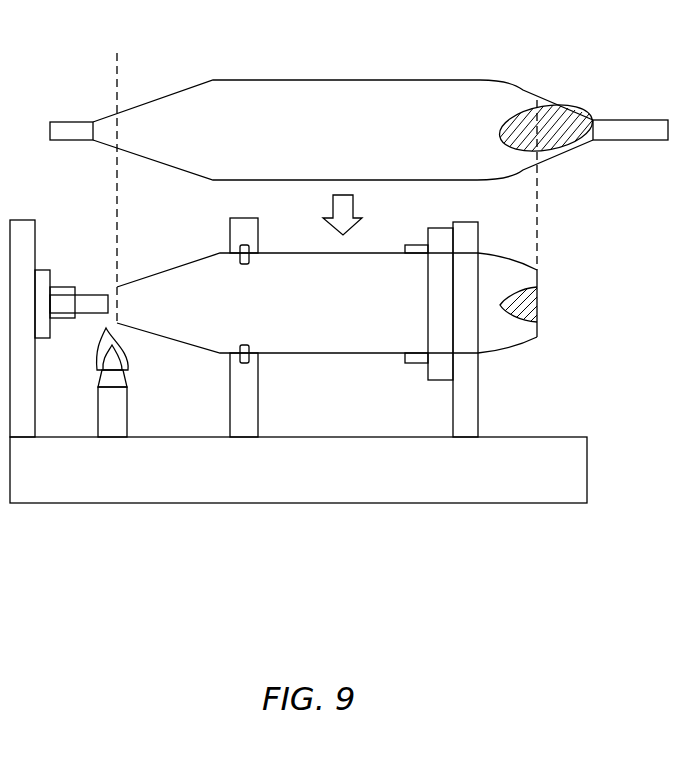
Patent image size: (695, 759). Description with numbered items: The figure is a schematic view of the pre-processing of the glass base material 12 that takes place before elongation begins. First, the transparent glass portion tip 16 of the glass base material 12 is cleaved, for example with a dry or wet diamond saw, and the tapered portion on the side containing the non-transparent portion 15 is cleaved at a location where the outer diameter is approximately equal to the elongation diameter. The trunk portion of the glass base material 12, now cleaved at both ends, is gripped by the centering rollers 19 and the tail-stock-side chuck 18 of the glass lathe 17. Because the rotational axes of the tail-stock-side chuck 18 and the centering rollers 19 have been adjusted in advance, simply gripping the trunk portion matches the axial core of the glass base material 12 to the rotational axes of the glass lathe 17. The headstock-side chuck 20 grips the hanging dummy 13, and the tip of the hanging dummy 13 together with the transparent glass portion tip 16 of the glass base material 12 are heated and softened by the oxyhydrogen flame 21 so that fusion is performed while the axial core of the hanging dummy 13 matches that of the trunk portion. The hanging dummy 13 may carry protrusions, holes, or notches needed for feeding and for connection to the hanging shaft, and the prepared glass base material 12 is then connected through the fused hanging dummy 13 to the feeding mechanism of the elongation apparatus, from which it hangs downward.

The glass base material 12 is at (322, 80).
The hanging dummy 13 is at (89, 303).
The non-transparent portion 15 is at (521, 125).
The transparent glass portion tip 16 is at (122, 58).
The glass lathe 17 is at (307, 503).
The tail-stock-side chuck 18 is at (415, 244).
The centering rollers 19 is at (230, 235).
The headstock-side chuck 20 is at (60, 287).
The oxyhydrogen flame 21 is at (97, 363).